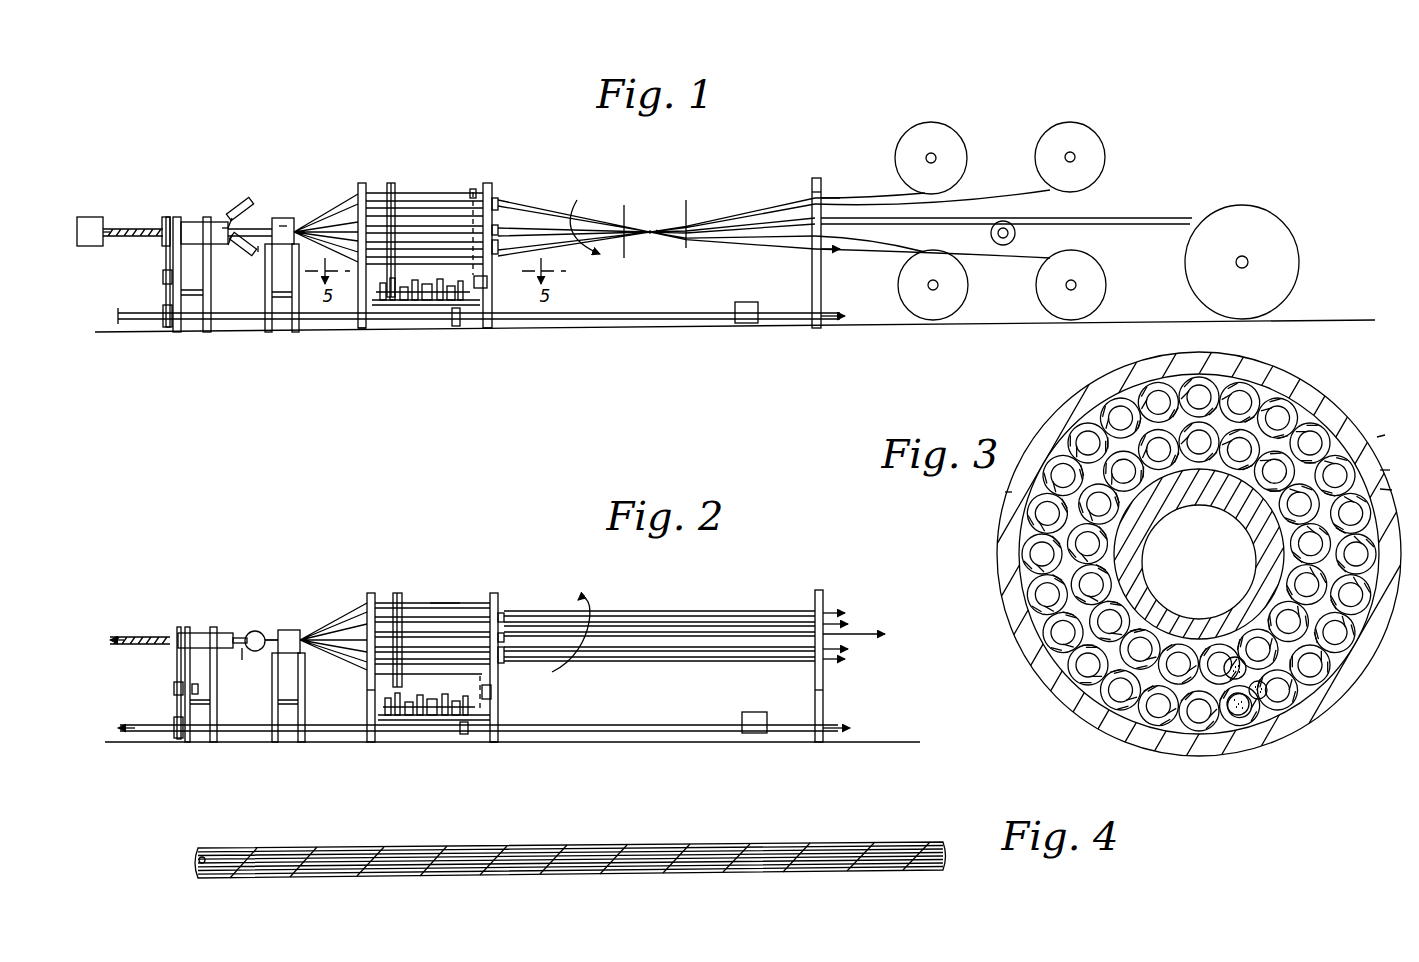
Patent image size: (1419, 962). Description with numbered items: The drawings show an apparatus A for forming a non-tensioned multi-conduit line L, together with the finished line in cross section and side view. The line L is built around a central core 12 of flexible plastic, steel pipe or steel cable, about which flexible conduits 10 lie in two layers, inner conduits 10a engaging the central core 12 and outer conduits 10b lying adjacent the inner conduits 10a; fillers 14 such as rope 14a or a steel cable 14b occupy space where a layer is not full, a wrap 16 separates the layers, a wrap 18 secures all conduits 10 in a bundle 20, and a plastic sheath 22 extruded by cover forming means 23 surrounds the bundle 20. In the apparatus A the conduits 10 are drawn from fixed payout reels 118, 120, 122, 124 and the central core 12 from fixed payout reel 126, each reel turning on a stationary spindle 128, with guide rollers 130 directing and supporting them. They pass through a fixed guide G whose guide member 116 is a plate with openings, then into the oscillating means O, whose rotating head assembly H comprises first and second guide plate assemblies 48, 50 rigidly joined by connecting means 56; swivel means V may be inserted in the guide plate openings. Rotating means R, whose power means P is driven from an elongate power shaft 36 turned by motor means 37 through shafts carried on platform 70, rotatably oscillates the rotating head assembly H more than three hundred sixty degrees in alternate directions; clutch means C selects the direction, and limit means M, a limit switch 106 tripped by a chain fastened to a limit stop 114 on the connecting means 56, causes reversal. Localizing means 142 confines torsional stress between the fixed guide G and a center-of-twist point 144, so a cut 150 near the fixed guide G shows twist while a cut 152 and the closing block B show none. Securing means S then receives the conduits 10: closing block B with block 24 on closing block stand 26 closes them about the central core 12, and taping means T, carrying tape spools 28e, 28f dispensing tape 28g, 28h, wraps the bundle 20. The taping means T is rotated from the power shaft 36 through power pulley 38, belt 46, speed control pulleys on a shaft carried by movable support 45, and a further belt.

In FIG. 1, the conduits 10 is at (978, 201).
In FIG. 2, the conduits 10 is at (712, 611).
In FIG. 3, the conduits 10 is at (1202, 539).
In FIG. 4, the conduits 10 is at (556, 846).
In FIG. 3, the inner conduits 10a is at (1255, 377).
In FIG. 3, the outer conduits 10b is at (1322, 392).
In FIG. 1, the central core 12 is at (1150, 217).
In FIG. 3, the central core 12 is at (1255, 516).
In FIG. 3, the fillers 14 is at (1262, 702).
In FIG. 3, the rope 14a is at (1236, 656).
In FIG. 3, the steel cable 14b is at (1236, 716).
In FIG. 3, the wrap 16 is at (1380, 470).
In FIG. 3, the wrap 18 is at (1380, 489).
In FIG. 3, the bundle 20 is at (1322, 416).
In FIG. 3, the plastic sheath 22 is at (1012, 492).
In FIG. 1, the cover forming means 23 is at (88, 215).
In FIG. 1, the block 24 is at (279, 226).
In FIG. 1, the closing block stand 26 is at (266, 324).
In FIG. 1, the tape spool 28e is at (258, 250).
In FIG. 2, the tape spool 28e is at (250, 632).
In FIG. 1, the tape spool 28f is at (240, 202).
In FIG. 1, the tape 28g is at (232, 252).
In FIG. 2, the tape 28g is at (242, 660).
In FIG. 1, the tape 28h is at (222, 228).
In FIG. 1, the power shaft 36 is at (601, 320).
In FIG. 2, the power shaft 36 is at (640, 724).
In FIG. 1, the motor means 37 is at (740, 326).
In FIG. 2, the motor means 37 is at (748, 711).
In FIG. 2, the power pulley 38 is at (175, 722).
In FIG. 2, the movable support 45 is at (198, 690).
In FIG. 1, the belt 46 is at (163, 291).
In FIG. 1, the first guide plate assembly 48 is at (165, 242).
In FIG. 2, the first guide plate assembly 48 is at (366, 690).
In FIG. 1, the second guide plate assembly 50 is at (488, 332).
In FIG. 2, the second guide plate assembly 50 is at (500, 597).
In FIG. 2, the connecting means 56 is at (443, 600).
In FIG. 1, the platform 70 is at (427, 304).
In FIG. 2, the platform 70 is at (415, 720).
In FIG. 2, the limit switch 106 is at (492, 693).
In FIG. 1, the limit stop 114 is at (472, 189).
In FIG. 2, the limit stop 114 is at (484, 676).
In FIG. 1, the guide member 116 is at (812, 192).
In FIG. 2, the guide member 116 is at (824, 690).
In FIG. 1, the payout reel 118 is at (928, 123).
In FIG. 1, the payout reel 120 is at (968, 298).
In FIG. 1, the payout reel 122 is at (1105, 297).
In FIG. 1, the payout reel 124 is at (1082, 127).
In FIG. 1, the payout reel 126 is at (1285, 226).
In FIG. 1, the spindle 128 is at (1242, 256).
In FIG. 1, the guide rollers 130 is at (1016, 234).
In FIG. 1, the localizing means 142 is at (651, 210).
In FIG. 1, the point 144 is at (656, 230).
In FIG. 1, the cut 150 is at (686, 199).
In FIG. 1, the cut 152 is at (624, 204).
In FIG. 1, the apparatus A is at (547, 160).
In FIG. 1, the closing block B is at (284, 216).
In FIG. 2, the closing block B is at (292, 628).
In FIG. 2, the clutch means C is at (432, 714).
In FIG. 1, the fixed guide G is at (817, 177).
In FIG. 2, the fixed guide G is at (818, 588).
In FIG. 1, the rotating head assembly H is at (488, 181).
In FIG. 2, the rotating head assembly H is at (494, 591).
In FIG. 1, the multi-conduit line L is at (128, 228).
In FIG. 2, the multi-conduit line L is at (128, 635).
In FIG. 3, the multi-conduit line L is at (1377, 437).
In FIG. 4, the multi-conduit line L is at (724, 845).
In FIG. 1, the limit means M is at (489, 283).
In FIG. 1, the oscillating means O is at (425, 178).
In FIG. 2, the oscillating means O is at (420, 600).
In FIG. 1, the power means P is at (455, 327).
In FIG. 1, the rotating means R is at (392, 181).
In FIG. 2, the rotating means R is at (397, 591).
In FIG. 1, the securing means S is at (270, 180).
In FIG. 1, the taping means T is at (192, 216).
In FIG. 2, the taping means T is at (200, 626).
In FIG. 1, the swivel means V is at (114, 226).
In FIG. 2, the swivel means V is at (272, 636).